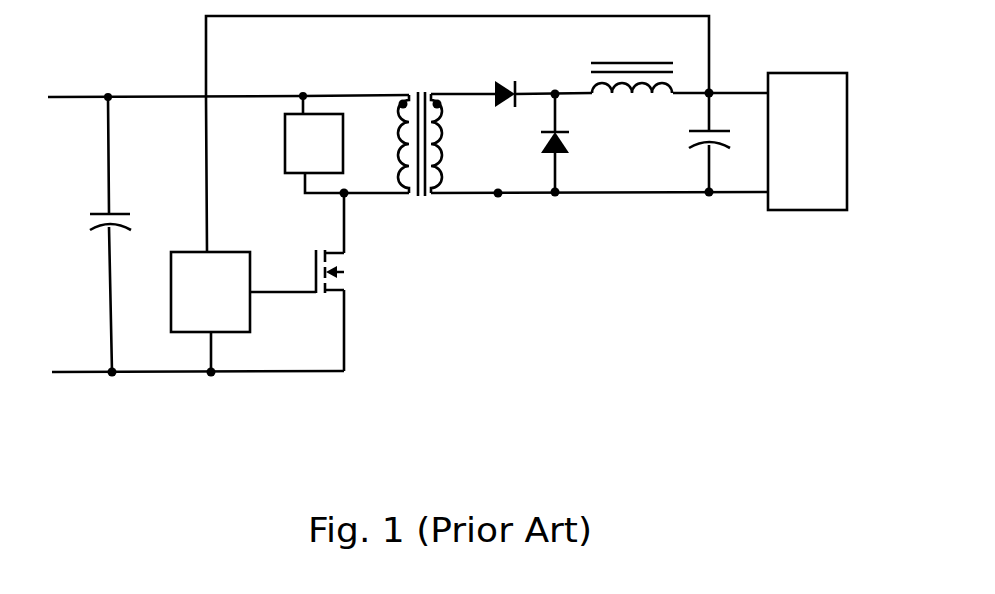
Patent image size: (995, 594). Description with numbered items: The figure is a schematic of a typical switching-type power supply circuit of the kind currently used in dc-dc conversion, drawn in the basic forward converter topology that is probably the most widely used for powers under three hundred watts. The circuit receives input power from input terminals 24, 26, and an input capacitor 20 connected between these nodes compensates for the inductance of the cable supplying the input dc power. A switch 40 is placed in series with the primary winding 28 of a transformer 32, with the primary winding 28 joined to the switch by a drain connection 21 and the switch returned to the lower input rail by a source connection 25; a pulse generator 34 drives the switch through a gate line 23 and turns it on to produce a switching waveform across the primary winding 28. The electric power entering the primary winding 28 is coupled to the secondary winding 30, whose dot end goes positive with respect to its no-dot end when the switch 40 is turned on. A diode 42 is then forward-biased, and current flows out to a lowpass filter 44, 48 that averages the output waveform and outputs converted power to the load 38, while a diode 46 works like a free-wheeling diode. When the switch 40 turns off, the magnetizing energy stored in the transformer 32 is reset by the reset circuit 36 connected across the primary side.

The input capacitor 20 is at (91, 223).
The drain connection line 21 is at (347, 232).
The gate drive line 23 is at (280, 290).
The input terminal 24 is at (107, 94).
The source connection line 25 is at (345, 326).
The input terminal 26 is at (110, 370).
The primary winding 28 is at (406, 166).
The secondary winding 30 is at (440, 165).
The transformer 32 is at (422, 92).
The pulse generator 34 is at (210, 234).
The reset circuit 36 is at (347, 144).
The load 38 is at (807, 141).
The switch 40 is at (348, 270).
The diode 42 is at (503, 80).
The lowpass filter inductor 44 is at (629, 62).
The free-wheeling diode 46 is at (567, 148).
The lowpass filter capacitor 48 is at (707, 130).